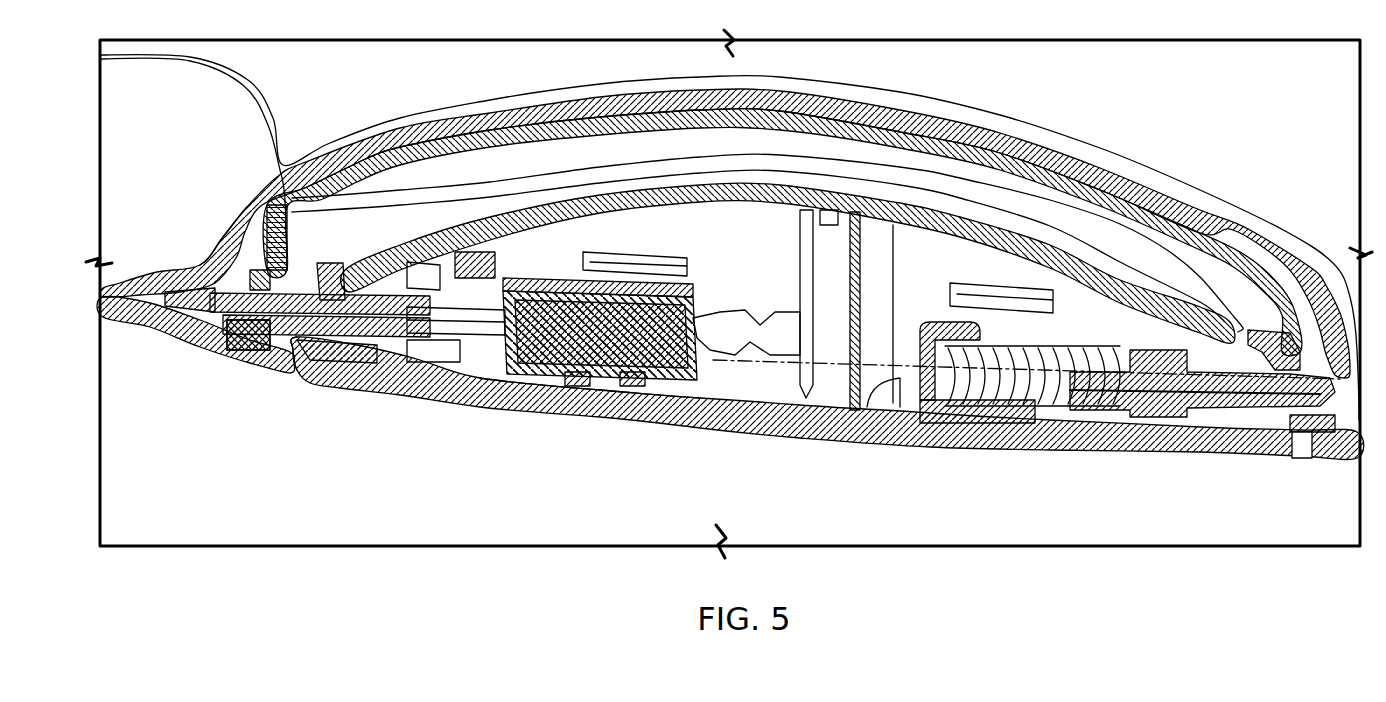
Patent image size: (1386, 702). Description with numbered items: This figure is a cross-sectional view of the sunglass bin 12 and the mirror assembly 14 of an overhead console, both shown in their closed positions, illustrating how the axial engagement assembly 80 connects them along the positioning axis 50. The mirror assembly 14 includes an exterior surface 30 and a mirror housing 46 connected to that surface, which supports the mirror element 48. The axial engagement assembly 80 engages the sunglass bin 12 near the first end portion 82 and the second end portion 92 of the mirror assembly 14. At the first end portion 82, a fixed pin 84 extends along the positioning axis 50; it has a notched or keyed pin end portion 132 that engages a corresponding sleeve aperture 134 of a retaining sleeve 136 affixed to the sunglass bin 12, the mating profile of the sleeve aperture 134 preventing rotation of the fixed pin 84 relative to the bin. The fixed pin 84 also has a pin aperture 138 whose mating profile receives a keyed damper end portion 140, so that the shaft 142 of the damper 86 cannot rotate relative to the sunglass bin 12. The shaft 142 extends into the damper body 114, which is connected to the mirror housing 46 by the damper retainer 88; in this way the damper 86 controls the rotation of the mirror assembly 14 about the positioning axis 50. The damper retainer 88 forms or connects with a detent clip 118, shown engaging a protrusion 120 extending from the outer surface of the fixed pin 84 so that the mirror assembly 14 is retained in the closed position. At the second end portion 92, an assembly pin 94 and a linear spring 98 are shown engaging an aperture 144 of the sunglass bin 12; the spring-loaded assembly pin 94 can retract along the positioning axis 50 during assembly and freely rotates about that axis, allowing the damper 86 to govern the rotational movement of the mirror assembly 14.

The sunglass bin 12 is at (178, 338).
The mirror assembly 14 is at (823, 449).
The exterior surface 30 is at (532, 420).
The mirror housing 46 is at (320, 270).
The mirror element 48 is at (593, 193).
The positioning axis 50 is at (905, 400).
The axial engagement assembly 80 is at (923, 303).
The first end portion 82 is at (283, 385).
The fixed pin 84 is at (367, 385).
The damper 86 is at (645, 380).
The damper retainer 88 is at (540, 283).
The second end portion 92 is at (1278, 466).
The assembly pin 94 is at (1215, 433).
The linear spring 98 is at (1003, 448).
The damper body 114 is at (645, 272).
The detent clip 118 is at (460, 268).
The protrusion 120 is at (440, 250).
The pin end portion 132 is at (220, 283).
The sleeve aperture 134 is at (263, 233).
The retaining sleeve 136 is at (225, 360).
The pin aperture 138 is at (423, 377).
The damper end portion 140 is at (470, 385).
The shaft 142 is at (565, 410).
The aperture 144 is at (1277, 453).